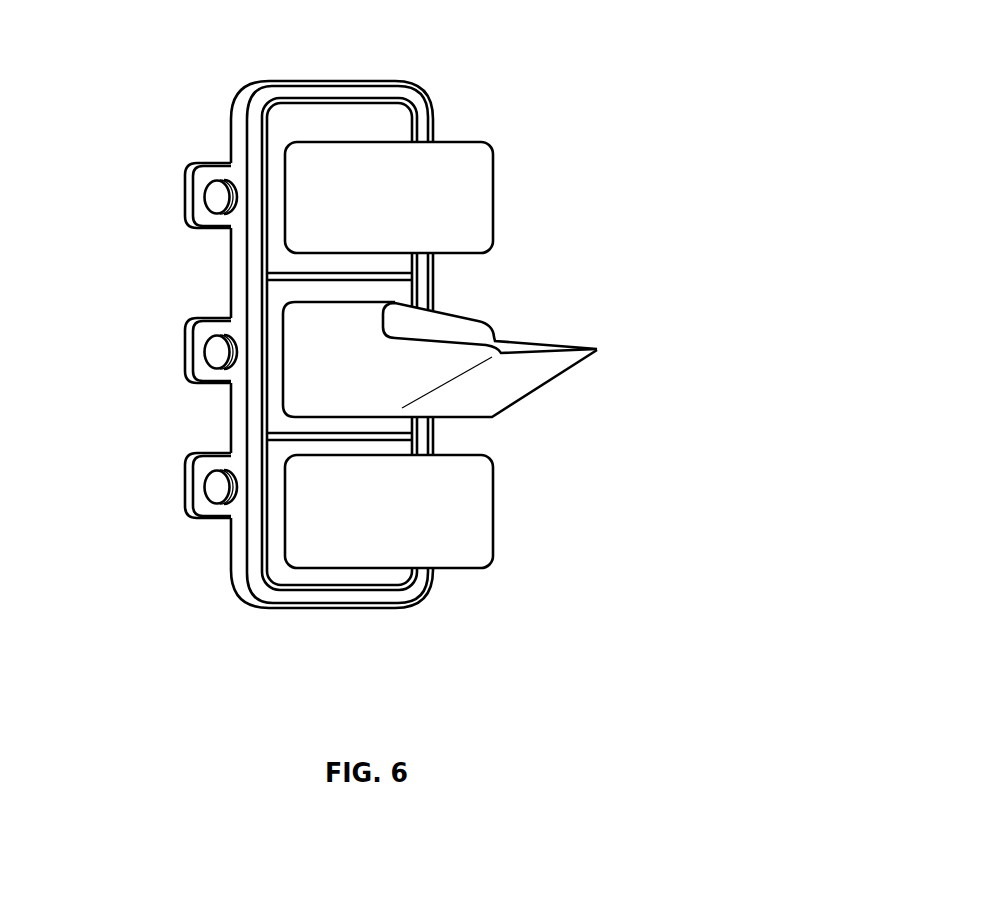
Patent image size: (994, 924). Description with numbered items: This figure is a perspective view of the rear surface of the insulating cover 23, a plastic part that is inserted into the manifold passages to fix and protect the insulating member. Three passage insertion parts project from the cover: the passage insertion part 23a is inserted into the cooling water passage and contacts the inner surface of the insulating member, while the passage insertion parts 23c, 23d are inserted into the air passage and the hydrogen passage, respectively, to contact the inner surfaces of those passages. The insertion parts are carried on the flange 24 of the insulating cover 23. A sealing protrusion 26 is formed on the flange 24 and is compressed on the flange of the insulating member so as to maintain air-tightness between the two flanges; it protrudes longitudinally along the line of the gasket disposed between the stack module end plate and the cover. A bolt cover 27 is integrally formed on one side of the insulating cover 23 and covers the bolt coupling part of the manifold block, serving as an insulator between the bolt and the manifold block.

The insulating cover 23 is at (489, 68).
The passage insertion part 23a is at (510, 373).
The passage insertion part 23c is at (455, 208).
The passage insertion part 23d is at (448, 540).
The flange 24 is at (235, 545).
The sealing protrusion 26 is at (262, 342).
The bolt cover 27 is at (212, 455).